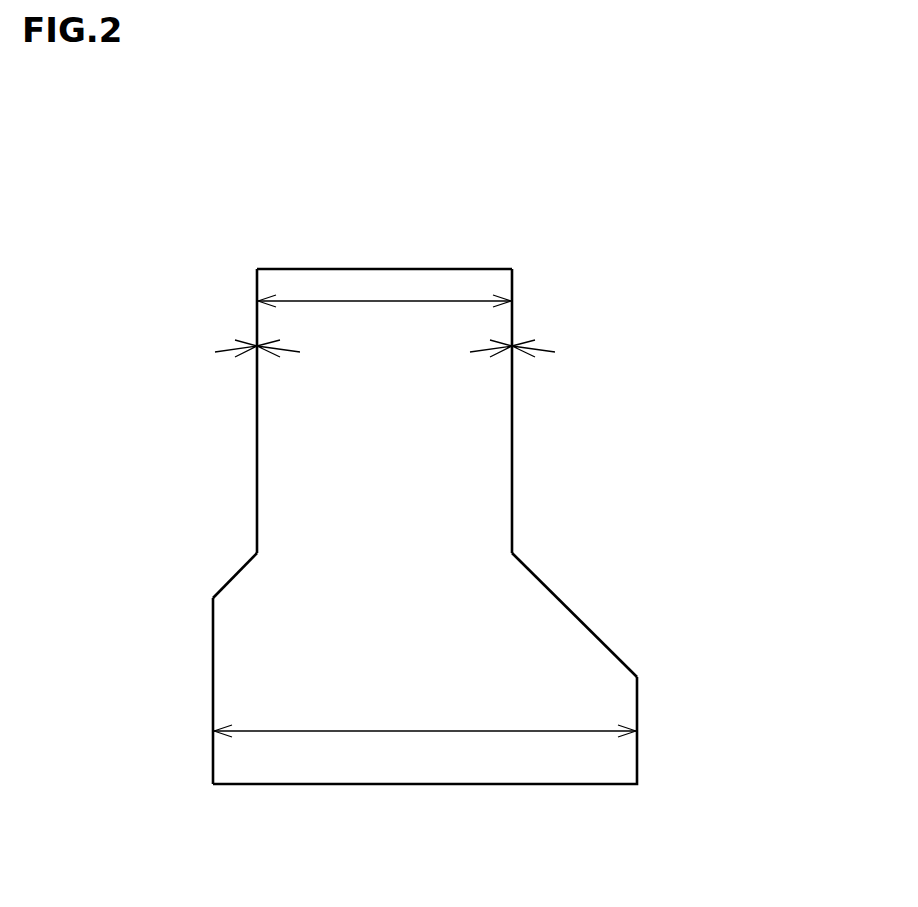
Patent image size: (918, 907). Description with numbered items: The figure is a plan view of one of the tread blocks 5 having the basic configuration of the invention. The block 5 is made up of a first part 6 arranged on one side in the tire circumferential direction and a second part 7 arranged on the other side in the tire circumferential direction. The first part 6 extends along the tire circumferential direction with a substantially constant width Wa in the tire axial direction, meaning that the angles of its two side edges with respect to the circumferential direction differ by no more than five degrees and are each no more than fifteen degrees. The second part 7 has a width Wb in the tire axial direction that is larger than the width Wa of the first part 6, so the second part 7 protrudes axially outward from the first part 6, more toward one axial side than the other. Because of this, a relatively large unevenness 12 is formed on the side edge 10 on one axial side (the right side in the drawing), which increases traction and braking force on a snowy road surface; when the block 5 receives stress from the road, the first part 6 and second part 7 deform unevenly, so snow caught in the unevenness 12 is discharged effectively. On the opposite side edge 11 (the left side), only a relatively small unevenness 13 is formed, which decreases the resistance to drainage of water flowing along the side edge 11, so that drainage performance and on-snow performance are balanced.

The block 5 is at (369, 253).
The first part 6 is at (442, 412).
The second part 7 is at (445, 645).
The side edge 10 is at (512, 487).
The side edge 11 is at (257, 438).
The unevenness 12 is at (603, 638).
The unevenness 13 is at (213, 667).
The width of the first part Wa is at (384, 301).
The width of the second part Wb is at (425, 731).